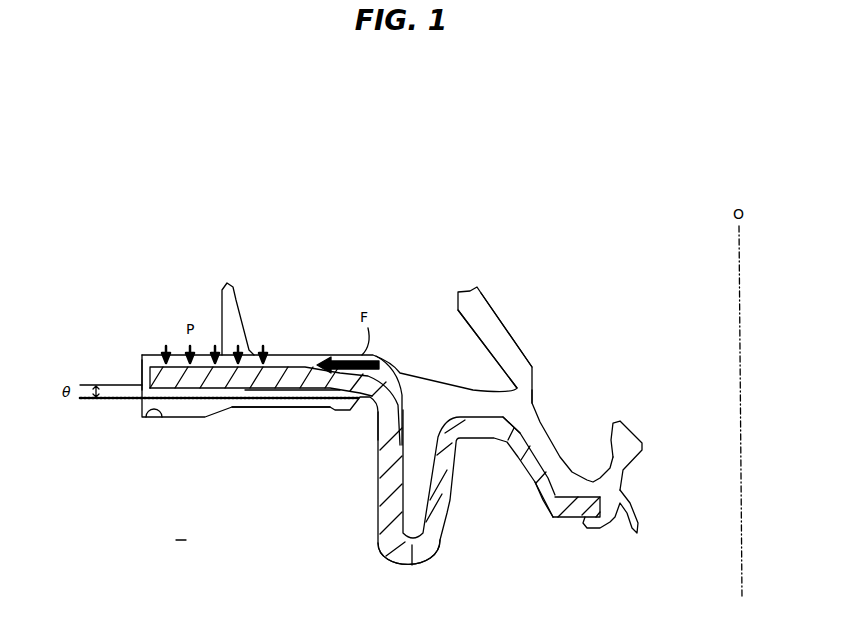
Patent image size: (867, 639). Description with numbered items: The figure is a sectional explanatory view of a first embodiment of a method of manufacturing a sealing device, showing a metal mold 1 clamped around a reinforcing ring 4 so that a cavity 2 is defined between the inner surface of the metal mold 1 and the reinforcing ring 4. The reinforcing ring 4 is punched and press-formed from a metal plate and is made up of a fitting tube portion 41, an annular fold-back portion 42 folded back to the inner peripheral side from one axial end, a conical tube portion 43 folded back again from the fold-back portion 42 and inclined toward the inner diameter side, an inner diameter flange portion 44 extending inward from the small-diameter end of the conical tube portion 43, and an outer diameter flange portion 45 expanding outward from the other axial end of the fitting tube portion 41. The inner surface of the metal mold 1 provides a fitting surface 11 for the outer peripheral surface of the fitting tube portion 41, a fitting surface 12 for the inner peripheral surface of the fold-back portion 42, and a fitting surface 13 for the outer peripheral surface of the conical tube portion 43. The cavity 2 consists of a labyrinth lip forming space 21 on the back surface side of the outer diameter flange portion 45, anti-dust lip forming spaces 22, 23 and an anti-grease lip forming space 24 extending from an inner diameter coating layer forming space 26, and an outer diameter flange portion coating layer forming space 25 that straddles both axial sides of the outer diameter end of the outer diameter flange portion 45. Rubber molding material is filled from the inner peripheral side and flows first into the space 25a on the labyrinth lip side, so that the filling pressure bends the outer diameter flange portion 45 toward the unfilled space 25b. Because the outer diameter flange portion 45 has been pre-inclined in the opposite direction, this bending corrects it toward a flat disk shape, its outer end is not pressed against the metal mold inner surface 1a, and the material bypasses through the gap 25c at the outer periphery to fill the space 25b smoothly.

The metal mold 1 is at (181, 532).
The metal mold inner surface 1a is at (142, 420).
The cavity 2 is at (431, 396).
The reinforcing ring 4 is at (372, 545).
The fitting surface 11 is at (377, 456).
The fitting surface 12 is at (448, 533).
The fitting surface 13 is at (538, 492).
The labyrinth lip forming space 21 is at (230, 290).
The anti-dust lip forming space 22 is at (487, 310).
The anti-dust lip forming space 23 is at (615, 430).
The anti-grease lip forming space 24 is at (630, 533).
The outer diameter flange portion coating layer forming space 25 is at (305, 350).
The space 25a is at (283, 357).
The unfilled space 25b is at (207, 412).
The gap 25c is at (132, 362).
The inner diameter coating layer forming space 26 is at (540, 438).
The fitting tube portion 41 is at (378, 478).
The annular fold-back portion 42 is at (453, 487).
The conical tube portion 43 is at (532, 472).
The inner diameter flange portion 44 is at (575, 518).
The outer diameter flange portion 45 is at (252, 412).